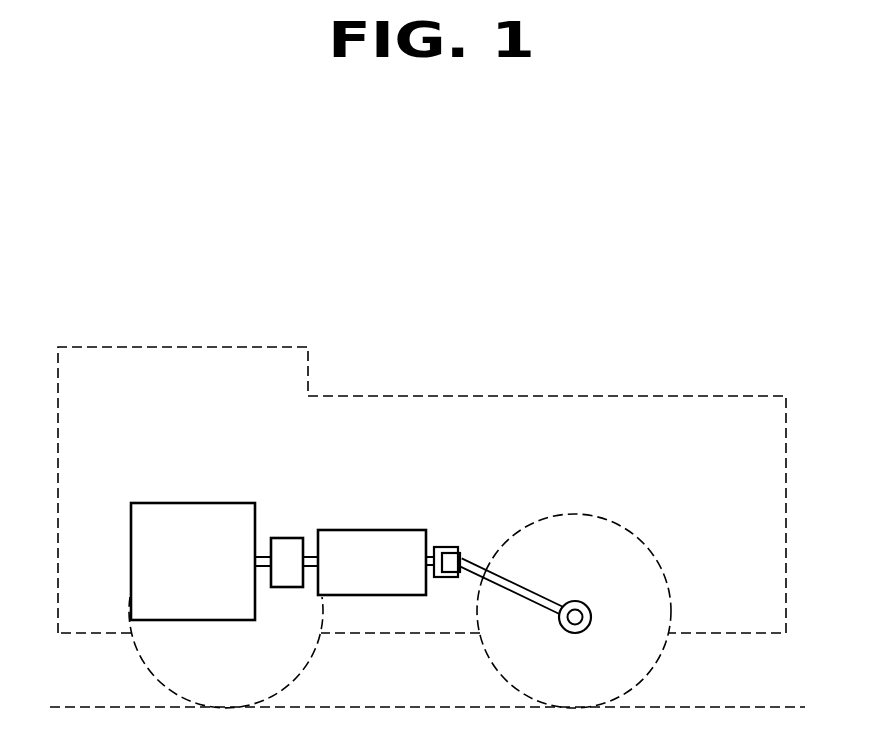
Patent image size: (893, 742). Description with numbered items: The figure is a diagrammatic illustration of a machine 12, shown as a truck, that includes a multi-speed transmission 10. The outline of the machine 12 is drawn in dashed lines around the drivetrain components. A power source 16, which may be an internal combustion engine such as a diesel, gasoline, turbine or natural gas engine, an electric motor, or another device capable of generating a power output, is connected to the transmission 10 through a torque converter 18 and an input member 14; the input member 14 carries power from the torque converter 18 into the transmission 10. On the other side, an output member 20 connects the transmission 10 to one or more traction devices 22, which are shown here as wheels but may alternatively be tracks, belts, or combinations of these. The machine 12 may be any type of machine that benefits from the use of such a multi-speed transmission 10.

The multi-speed transmission 10 is at (387, 575).
The machine 12 is at (594, 393).
The input member 14 is at (310, 553).
The power source 16 is at (207, 577).
The torque converter 18 is at (283, 537).
The output member 20 is at (445, 546).
The traction devices 22 is at (661, 568).